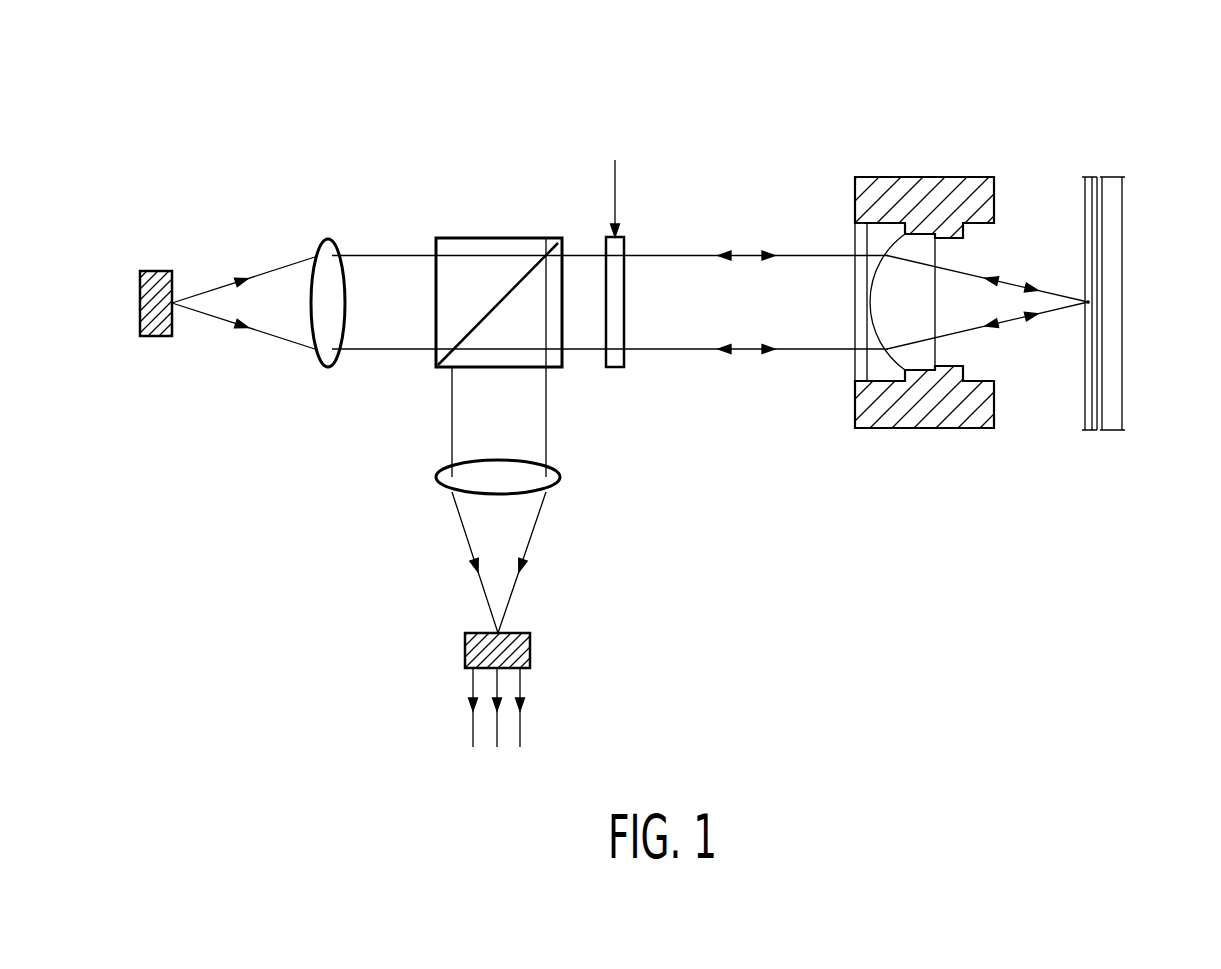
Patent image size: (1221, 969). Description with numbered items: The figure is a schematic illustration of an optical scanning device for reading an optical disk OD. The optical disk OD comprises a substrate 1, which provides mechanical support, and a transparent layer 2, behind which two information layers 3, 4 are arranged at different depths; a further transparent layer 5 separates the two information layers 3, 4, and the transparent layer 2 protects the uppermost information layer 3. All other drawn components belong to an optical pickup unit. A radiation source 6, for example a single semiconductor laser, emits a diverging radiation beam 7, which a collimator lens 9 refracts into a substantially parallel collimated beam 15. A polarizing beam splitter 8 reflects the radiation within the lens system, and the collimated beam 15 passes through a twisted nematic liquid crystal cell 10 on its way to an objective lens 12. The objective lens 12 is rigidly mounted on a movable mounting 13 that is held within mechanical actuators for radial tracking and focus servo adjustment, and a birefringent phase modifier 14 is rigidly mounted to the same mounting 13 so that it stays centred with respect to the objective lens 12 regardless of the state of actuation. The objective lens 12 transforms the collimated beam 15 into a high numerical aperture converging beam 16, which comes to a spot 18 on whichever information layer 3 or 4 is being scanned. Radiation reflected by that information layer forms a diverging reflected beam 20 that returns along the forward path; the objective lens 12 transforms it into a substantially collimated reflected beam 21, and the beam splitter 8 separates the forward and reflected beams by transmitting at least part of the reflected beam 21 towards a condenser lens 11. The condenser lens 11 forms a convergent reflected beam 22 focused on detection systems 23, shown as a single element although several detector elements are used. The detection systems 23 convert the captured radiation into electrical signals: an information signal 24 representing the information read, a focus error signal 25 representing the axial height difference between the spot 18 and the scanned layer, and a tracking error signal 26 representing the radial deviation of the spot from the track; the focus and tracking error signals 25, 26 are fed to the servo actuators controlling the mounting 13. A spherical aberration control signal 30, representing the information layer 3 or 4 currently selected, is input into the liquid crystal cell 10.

The substrate 1 is at (1112, 353).
The transparent layer 2 is at (1093, 251).
The information layer 3 is at (1096, 197).
The information layer 4 is at (1104, 275).
The further transparent layer 5 is at (1100, 221).
The radiation source 6 is at (157, 270).
The diverging radiation beam 7 is at (245, 278).
The beam splitter 8 is at (490, 237).
The collimator lens 9 is at (327, 237).
The twisted nematic liquid crystal cell 10 is at (625, 246).
The condenser lens 11 is at (436, 478).
The objective lens 12 is at (890, 317).
The movable mounting 13 is at (903, 176).
The phase modifier 14 is at (858, 374).
The collimated beam 15 is at (763, 252).
The converging beam 16 is at (1030, 287).
The spot 18 is at (1088, 302).
The reflected beam 20 is at (990, 327).
The collimated reflected beam 21 is at (725, 352).
The convergent reflected beam 22 is at (470, 566).
The detection systems 23 is at (464, 653).
The information signal 24 is at (467, 705).
The focus error signal 25 is at (497, 737).
The tracking error signal 26 is at (526, 705).
The spherical aberration control signal 30 is at (616, 181).
The optical disk OD is at (1139, 249).